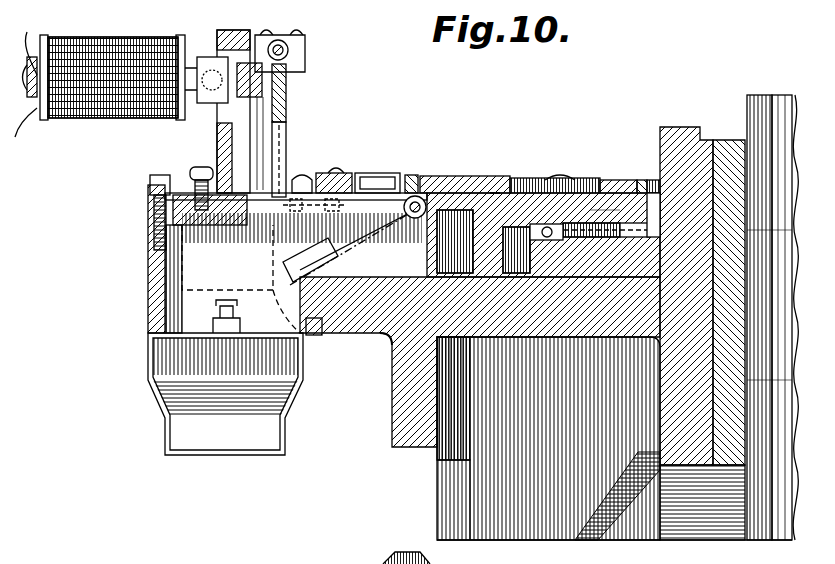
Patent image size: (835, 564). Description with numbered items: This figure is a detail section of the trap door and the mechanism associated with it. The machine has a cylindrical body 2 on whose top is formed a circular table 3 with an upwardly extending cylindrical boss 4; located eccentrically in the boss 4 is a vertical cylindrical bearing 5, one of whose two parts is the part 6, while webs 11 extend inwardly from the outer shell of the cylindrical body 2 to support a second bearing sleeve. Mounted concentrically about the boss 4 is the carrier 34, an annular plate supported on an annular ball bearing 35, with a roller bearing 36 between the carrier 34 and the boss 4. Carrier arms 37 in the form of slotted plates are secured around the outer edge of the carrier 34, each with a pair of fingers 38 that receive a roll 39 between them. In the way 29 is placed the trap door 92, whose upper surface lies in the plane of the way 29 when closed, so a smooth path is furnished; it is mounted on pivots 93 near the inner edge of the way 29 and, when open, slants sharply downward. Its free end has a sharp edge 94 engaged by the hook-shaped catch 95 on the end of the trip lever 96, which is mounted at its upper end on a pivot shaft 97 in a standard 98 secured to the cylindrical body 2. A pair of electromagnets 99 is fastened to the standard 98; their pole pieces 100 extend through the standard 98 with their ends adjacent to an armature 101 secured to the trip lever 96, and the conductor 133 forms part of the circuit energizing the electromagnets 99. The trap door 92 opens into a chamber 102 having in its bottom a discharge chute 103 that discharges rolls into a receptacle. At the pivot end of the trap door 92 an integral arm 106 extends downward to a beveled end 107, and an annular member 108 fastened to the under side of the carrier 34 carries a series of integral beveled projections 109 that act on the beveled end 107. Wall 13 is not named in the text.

The cylindrical body 2 is at (408, 447).
The circular table 3 is at (346, 335).
The cylindrical boss 4 is at (681, 162).
The vertical cylindrical bearing 5 is at (760, 378).
The bearing part 6 is at (735, 225).
The webs 11 is at (572, 495).
The side wall 13 is at (771, 122).
The way 29 is at (346, 178).
The carrier 34 is at (600, 203).
The annular ball bearing 35 is at (550, 200).
The roller bearing 36 is at (645, 205).
The carrier arms 37 is at (505, 205).
The fingers 38 is at (398, 178).
The roll 39 is at (375, 183).
The trap door 92 is at (370, 207).
The pivots 93 is at (428, 195).
The sharp edge 94 is at (292, 190).
The hook-shaped catch 95 is at (285, 222).
The trip lever 96 is at (270, 137).
The pivot shaft 97 is at (292, 46).
The standard 98 is at (217, 146).
The electromagnets 99 is at (82, 70).
The pole pieces 100 is at (188, 78).
The armature 101 is at (263, 78).
The chamber 102 is at (241, 279).
The discharge chute 103 is at (262, 440).
The integral arm 106 is at (420, 243).
The beveled end 107 is at (398, 342).
The annular member 108 is at (527, 210).
The projections 109 is at (490, 193).
The conductor 133 is at (45, 16).